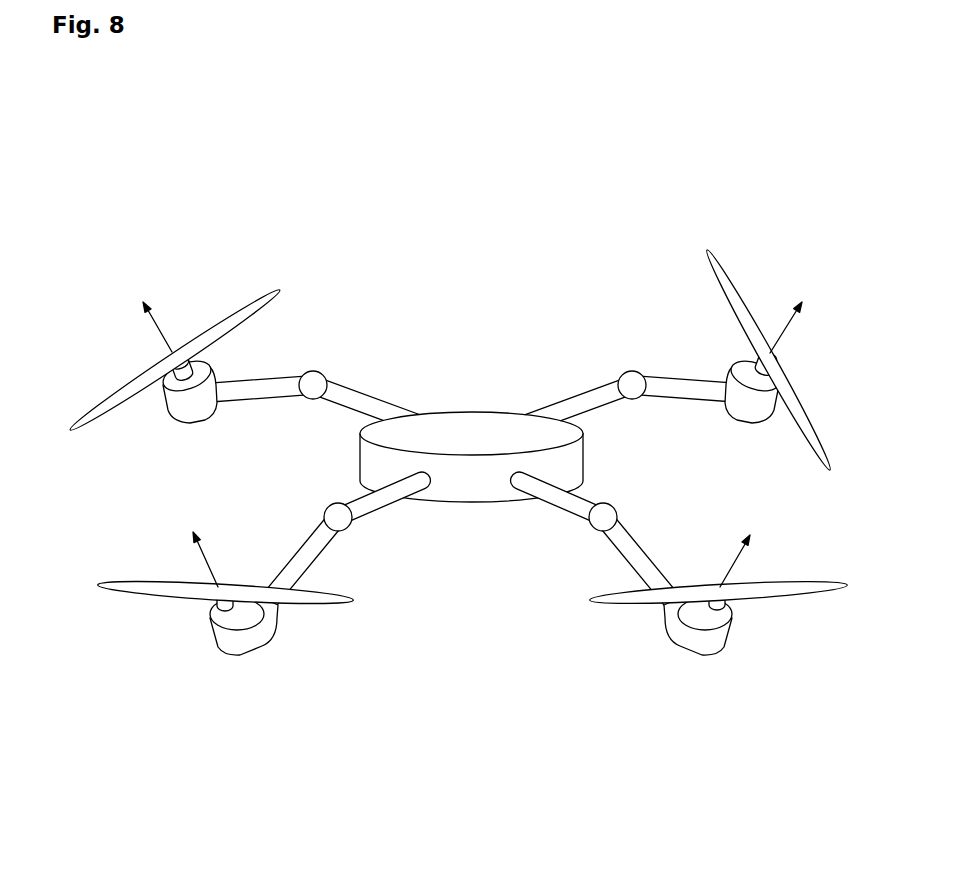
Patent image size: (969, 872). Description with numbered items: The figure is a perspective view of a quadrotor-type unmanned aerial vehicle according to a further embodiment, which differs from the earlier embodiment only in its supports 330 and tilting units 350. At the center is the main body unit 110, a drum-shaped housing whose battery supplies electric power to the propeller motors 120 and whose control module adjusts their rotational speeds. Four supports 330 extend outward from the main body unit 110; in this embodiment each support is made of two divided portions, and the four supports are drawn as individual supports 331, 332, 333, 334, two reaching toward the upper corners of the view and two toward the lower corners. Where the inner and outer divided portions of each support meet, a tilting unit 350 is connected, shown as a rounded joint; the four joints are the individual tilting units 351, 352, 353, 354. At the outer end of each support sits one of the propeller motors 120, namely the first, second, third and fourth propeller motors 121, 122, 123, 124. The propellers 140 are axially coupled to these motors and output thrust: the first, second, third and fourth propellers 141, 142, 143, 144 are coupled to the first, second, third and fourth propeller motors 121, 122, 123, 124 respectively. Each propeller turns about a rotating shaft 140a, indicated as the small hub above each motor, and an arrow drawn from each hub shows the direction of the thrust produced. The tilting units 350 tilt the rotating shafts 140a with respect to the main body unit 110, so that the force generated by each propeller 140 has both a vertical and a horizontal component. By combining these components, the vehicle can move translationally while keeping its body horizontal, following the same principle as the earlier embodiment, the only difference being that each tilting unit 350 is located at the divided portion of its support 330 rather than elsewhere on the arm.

The main body unit 110 is at (443, 417).
The propeller motors 120 is at (471, 554).
The first propeller motor 121 is at (243, 643).
The second propeller motor 122 is at (212, 427).
The third propeller motor 123 is at (740, 408).
The fourth propeller motor 124 is at (687, 640).
The propellers 140 is at (456, 404).
The rotating shaft 140a is at (737, 367).
The first propeller 141 is at (132, 583).
The second propeller 142 is at (240, 315).
The third propeller 143 is at (727, 280).
The fourth propeller 144 is at (797, 575).
The supports 330 is at (472, 461).
The first arm 331 is at (388, 498).
The second arm 332 is at (350, 397).
The third arm 333 is at (592, 397).
The fourth arm 334 is at (560, 500).
The tilting units 350 is at (451, 399).
The first joint 351 is at (333, 508).
The second joint 352 is at (310, 373).
The third joint 353 is at (632, 377).
The fourth joint 354 is at (608, 507).